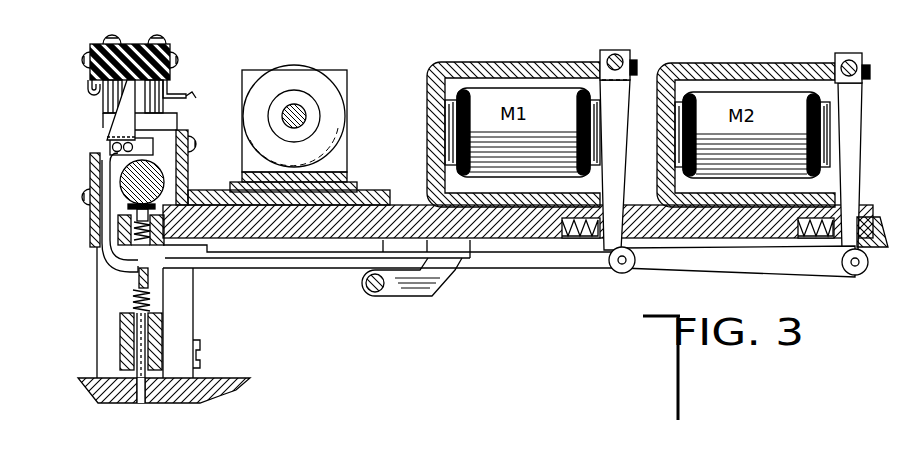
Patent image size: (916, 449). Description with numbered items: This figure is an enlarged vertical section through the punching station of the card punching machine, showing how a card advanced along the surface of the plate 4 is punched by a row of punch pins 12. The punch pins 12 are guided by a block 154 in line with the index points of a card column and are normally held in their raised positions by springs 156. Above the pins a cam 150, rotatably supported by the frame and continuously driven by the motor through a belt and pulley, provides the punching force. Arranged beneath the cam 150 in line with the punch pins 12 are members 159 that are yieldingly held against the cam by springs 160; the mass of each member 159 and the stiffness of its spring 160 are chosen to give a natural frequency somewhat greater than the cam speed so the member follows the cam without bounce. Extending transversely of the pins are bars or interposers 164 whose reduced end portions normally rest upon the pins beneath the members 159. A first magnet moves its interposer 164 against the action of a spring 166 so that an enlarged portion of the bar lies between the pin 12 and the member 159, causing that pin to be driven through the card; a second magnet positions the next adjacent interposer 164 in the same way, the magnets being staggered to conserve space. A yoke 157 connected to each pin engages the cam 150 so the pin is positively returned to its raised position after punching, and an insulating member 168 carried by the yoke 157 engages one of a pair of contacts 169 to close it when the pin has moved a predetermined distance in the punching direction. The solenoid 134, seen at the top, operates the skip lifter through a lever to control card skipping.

The plate 4 is at (221, 378).
The punch pins 12 is at (137, 352).
The solenoid 134 is at (300, 70).
The cam 150 is at (121, 175).
The block 154 is at (122, 332).
The springs 156 is at (133, 303).
The yoke 157 is at (108, 253).
The members 159 is at (130, 210).
The springs 160 is at (113, 258).
The interposers 164 is at (347, 263).
The spring 166 is at (583, 250).
The insulating member 168 is at (122, 124).
The contacts 169 is at (94, 91).